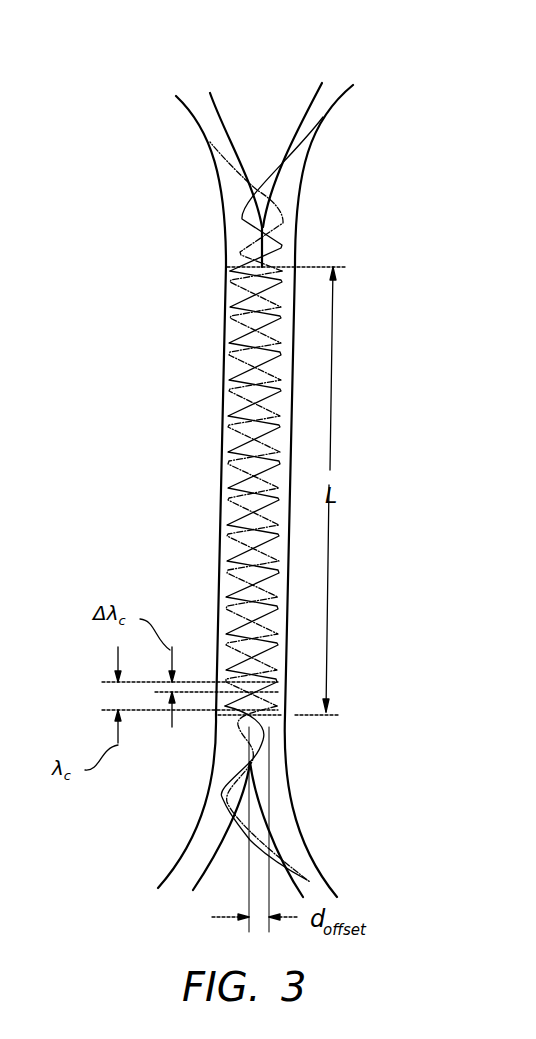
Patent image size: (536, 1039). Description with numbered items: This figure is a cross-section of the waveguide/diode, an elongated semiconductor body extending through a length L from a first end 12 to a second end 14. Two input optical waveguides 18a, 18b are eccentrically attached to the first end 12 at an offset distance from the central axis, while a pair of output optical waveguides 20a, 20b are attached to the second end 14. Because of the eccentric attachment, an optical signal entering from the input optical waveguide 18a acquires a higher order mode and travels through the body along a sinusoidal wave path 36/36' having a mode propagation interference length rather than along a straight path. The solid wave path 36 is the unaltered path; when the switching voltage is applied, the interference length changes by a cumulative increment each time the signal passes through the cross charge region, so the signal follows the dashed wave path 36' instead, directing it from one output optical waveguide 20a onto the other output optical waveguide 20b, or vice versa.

The first end 12 is at (277, 720).
The second end 14 is at (238, 268).
The input optical waveguide 18a is at (295, 842).
The input optical waveguide 18b is at (208, 842).
The output optical waveguide 20a is at (335, 92).
The output optical waveguide 20b is at (195, 103).
The wave path 36 is at (307, 498).
The wave path 36' is at (216, 512).